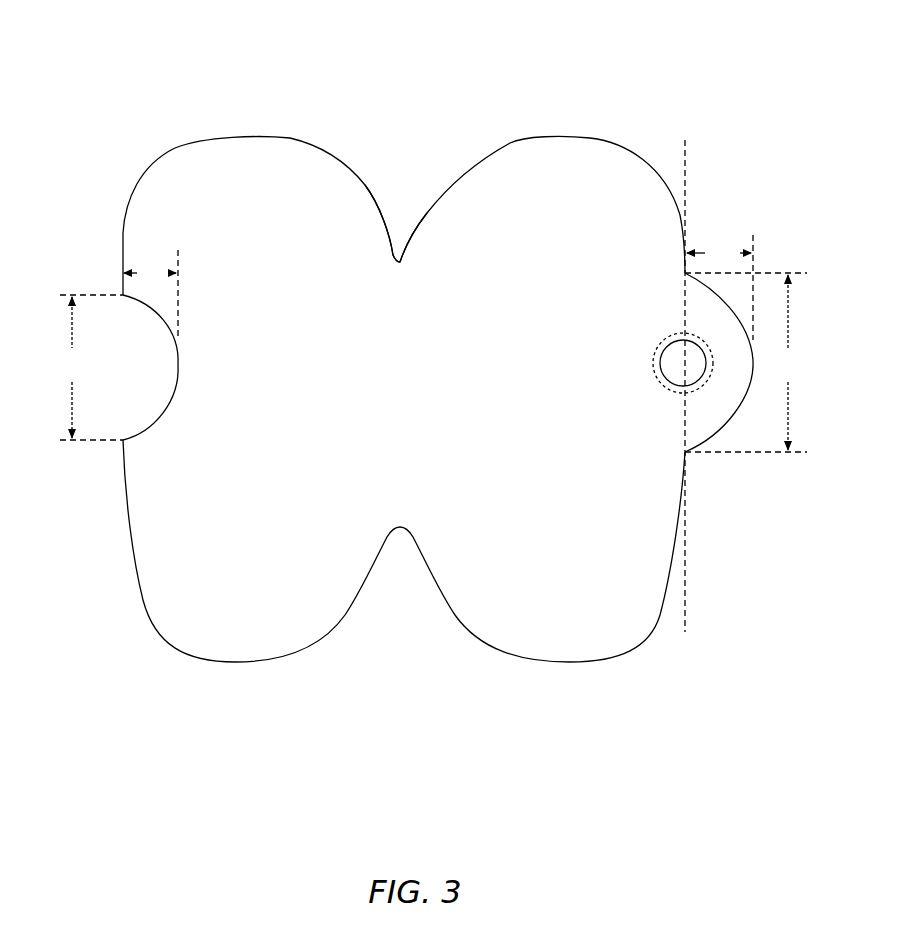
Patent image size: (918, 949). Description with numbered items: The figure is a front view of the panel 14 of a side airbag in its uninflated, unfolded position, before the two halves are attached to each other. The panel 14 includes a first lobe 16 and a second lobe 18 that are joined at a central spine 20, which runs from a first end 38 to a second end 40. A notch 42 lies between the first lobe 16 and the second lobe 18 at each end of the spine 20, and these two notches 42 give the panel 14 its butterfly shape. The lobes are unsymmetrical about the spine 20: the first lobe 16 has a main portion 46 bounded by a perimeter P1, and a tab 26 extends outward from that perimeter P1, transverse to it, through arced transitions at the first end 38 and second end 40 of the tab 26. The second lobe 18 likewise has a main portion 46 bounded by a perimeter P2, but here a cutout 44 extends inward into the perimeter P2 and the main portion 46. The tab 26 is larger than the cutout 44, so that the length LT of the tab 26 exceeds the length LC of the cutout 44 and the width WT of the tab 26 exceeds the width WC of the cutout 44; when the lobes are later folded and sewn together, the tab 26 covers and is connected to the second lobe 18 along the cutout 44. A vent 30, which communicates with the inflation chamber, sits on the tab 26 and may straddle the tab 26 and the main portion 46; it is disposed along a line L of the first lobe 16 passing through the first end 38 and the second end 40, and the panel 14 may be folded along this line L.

The panel 14 is at (434, 402).
The first lobe 16 is at (587, 418).
The second lobe 18 is at (246, 418).
The spine 20 is at (392, 298).
The tab 26 is at (713, 398).
The vent 30 is at (662, 365).
The first end 38 is at (401, 258).
The second end 40 is at (684, 452).
The notch 42 is at (395, 198).
The cutout 44 is at (170, 403).
The main portion 46 is at (237, 578).
The perimeter of the first lobe P1 is at (580, 137).
The perimeter of the second lobe P2 is at (228, 137).
The line L is at (687, 163).
The width of the tab WT is at (719, 287).
The length of the tab LT is at (746, 362).
The width of the cutout WC is at (150, 295).
The length of the cutout LC is at (91, 367).